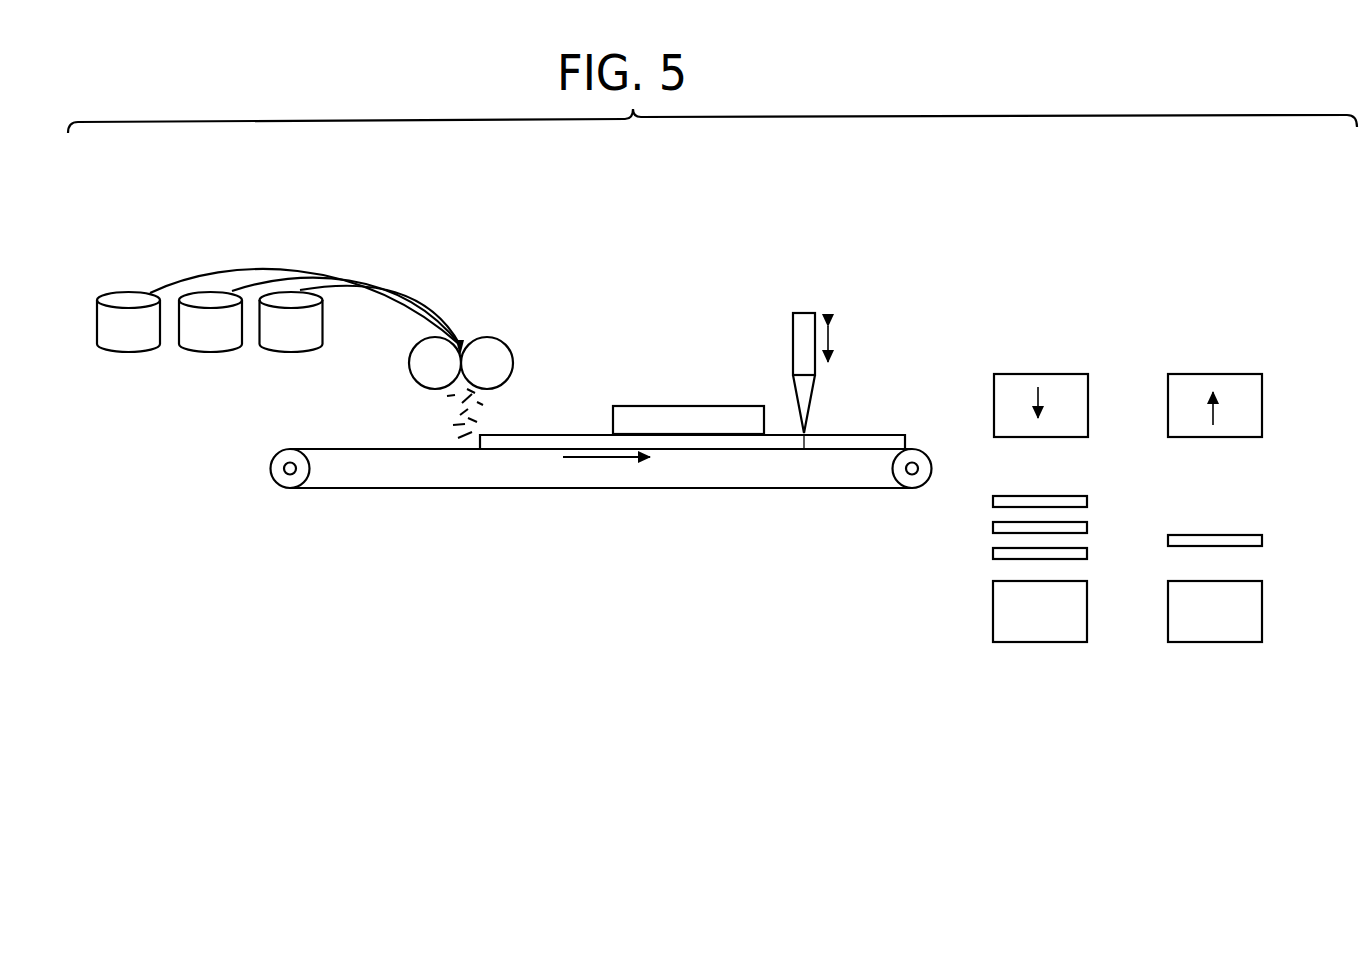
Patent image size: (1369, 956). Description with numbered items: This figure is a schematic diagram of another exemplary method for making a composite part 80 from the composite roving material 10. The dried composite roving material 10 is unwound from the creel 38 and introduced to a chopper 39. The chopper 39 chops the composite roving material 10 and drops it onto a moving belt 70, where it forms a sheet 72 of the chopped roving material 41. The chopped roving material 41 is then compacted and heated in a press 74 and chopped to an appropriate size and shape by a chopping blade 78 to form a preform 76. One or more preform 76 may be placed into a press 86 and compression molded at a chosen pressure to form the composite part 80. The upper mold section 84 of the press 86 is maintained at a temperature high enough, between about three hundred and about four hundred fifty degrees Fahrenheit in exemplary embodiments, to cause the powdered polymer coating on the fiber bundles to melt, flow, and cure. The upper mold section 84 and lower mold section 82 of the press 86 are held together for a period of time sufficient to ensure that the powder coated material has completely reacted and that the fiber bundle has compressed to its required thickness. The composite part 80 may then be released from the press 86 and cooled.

The composite roving material 10 is at (258, 254).
The creel 38 is at (273, 360).
The chopper 39 is at (491, 321).
The chopped roving material 41 is at (452, 414).
The moving belt 70 is at (575, 490).
The sheet 72 is at (540, 434).
The press 74 is at (680, 415).
The preform 76 is at (850, 436).
The chopping blade 78 is at (793, 336).
The composite part 80 is at (1245, 533).
The lower mold section 82 is at (1080, 608).
The upper mold section 84 is at (997, 387).
The press 86 is at (1194, 336).